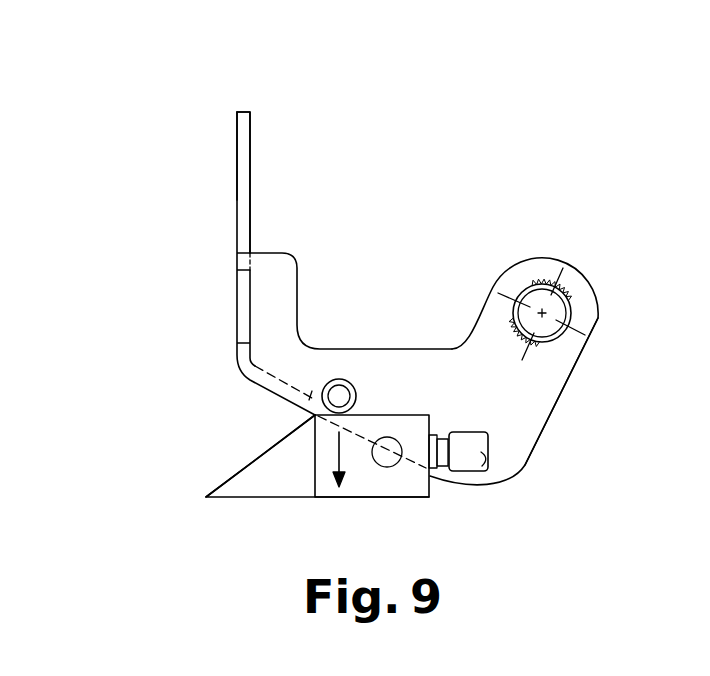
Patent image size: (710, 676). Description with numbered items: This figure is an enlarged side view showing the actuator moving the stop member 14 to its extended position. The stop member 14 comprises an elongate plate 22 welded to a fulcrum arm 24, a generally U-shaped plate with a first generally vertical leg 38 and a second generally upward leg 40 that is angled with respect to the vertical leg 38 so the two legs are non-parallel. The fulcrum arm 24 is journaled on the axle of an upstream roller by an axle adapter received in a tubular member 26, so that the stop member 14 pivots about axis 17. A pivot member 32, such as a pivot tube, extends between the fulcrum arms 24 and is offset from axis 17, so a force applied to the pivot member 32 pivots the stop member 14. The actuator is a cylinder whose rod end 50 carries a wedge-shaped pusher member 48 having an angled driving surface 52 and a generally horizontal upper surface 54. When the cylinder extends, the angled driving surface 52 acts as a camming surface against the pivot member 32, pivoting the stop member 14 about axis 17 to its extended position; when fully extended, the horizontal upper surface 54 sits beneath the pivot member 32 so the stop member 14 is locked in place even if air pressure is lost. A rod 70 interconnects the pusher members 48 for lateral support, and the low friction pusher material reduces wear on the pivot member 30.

The stop member 14 is at (214, 196).
The axis 17 is at (543, 311).
The elongate plate 22 is at (237, 133).
The fulcrum arm 24 is at (540, 397).
The tubular member 26 is at (573, 318).
The pivot member 30 is at (262, 161).
The pivot member 32 is at (339, 372).
The generally vertical leg 38 is at (577, 378).
The generally upward leg 40 is at (300, 279).
The pusher member 48 is at (250, 498).
The rod end 50 is at (467, 471).
The angled driving surface 52 is at (267, 447).
The generally horizontal upper surface 54 is at (385, 413).
The rod 70 is at (380, 465).